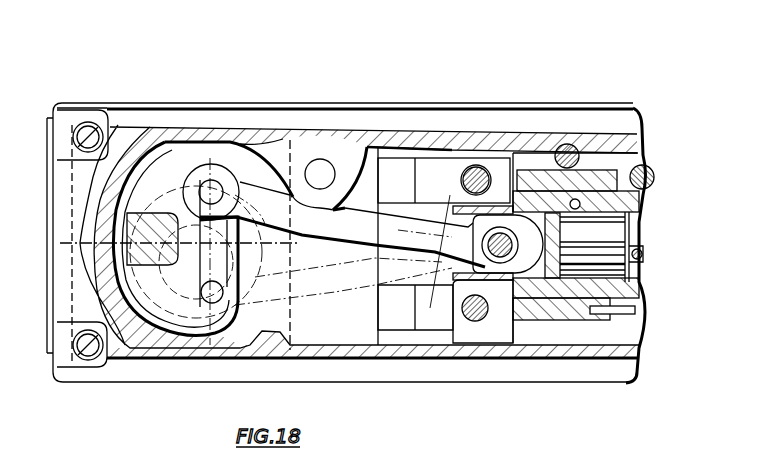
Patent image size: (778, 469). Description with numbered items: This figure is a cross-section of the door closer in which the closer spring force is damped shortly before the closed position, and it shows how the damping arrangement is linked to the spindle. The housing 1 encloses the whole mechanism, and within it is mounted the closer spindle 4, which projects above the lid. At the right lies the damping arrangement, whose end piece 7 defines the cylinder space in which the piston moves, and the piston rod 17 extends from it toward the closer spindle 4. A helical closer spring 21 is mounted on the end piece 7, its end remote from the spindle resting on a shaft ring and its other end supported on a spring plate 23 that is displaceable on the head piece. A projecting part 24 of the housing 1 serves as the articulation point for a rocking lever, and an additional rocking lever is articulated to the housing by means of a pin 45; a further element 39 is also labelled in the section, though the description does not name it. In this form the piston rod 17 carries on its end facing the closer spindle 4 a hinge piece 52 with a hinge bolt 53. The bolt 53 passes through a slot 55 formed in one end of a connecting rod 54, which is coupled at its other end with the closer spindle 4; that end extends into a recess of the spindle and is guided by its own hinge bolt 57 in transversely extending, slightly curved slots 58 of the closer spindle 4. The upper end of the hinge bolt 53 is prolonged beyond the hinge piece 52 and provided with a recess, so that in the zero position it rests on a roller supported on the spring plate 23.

The housing 1 is at (150, 215).
The closer spindle 4 is at (150, 290).
The end piece 7 is at (532, 283).
The piston rod 17 is at (640, 264).
The helical closer spring 21 is at (636, 108).
The spring plate 23 is at (548, 300).
The projecting part 24 is at (307, 155).
The guide block 39 is at (460, 157).
The pin 45 is at (568, 146).
The hinge piece 52 is at (570, 320).
The hinge bolt 53 is at (497, 262).
The connecting rod 54 is at (352, 222).
The slot 55 is at (478, 250).
The hinge bolt 57 is at (207, 282).
The slots 58 is at (222, 272).